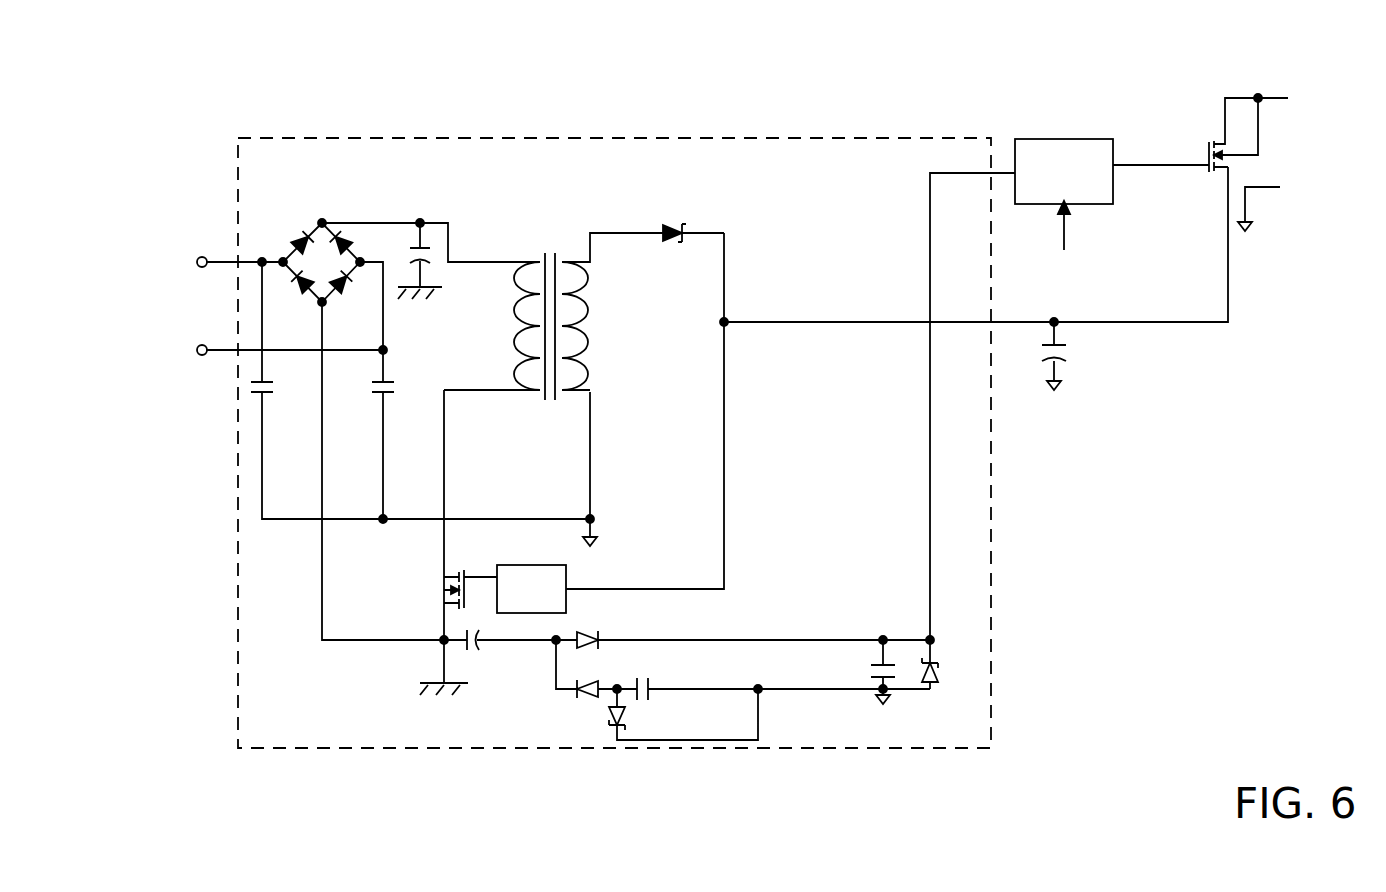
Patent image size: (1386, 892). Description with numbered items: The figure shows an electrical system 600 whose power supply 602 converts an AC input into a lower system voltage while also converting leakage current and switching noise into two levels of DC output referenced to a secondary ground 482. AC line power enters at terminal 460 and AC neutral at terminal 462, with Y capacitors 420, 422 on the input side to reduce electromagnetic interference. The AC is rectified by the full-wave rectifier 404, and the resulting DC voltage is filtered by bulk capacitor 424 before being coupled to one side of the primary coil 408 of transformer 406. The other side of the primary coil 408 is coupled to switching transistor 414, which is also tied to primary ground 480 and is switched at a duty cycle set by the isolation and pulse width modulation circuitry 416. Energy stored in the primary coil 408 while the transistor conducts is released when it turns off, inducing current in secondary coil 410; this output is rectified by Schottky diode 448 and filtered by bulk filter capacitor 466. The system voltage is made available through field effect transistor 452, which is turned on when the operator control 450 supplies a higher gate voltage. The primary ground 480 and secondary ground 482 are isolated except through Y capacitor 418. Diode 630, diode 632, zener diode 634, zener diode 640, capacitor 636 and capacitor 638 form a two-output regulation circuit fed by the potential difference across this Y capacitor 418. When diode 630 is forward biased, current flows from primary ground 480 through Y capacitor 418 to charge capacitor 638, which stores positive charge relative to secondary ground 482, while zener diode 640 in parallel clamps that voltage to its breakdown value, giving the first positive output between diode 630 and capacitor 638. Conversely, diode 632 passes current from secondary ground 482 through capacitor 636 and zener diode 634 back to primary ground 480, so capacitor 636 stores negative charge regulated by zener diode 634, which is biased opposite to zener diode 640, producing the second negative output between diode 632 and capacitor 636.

The power supply circuit 600 is at (203, 79).
The power converter module 602 is at (269, 138).
The full-wave rectifier 404 is at (322, 221).
The transformer 406 is at (553, 307).
The primary coil 408 is at (512, 318).
The secondary coil 410 is at (593, 318).
The switching transistor 414 is at (465, 570).
The isolation and pulse width modulation circuitry 416 is at (531, 589).
The Y capacitor 418 is at (480, 648).
The Y capacitor 420 is at (378, 392).
The Y capacitor 422 is at (268, 392).
The bulk capacitor 424 is at (417, 252).
The Schottky diode 448 is at (677, 243).
The operator control 450 is at (1112, 204).
The field effect transistor 452 is at (1207, 146).
The terminal 460 is at (200, 268).
The terminal 462 is at (200, 356).
The bulk filter capacitor 466 is at (1047, 360).
The primary ground 480 is at (426, 290).
The secondary ground 482 is at (592, 543).
The diode 630 is at (585, 634).
The diode 632 is at (607, 677).
The zener diode 634 is at (612, 729).
The capacitor 636 is at (649, 680).
The capacitor 638 is at (877, 665).
The zener diode 640 is at (940, 671).